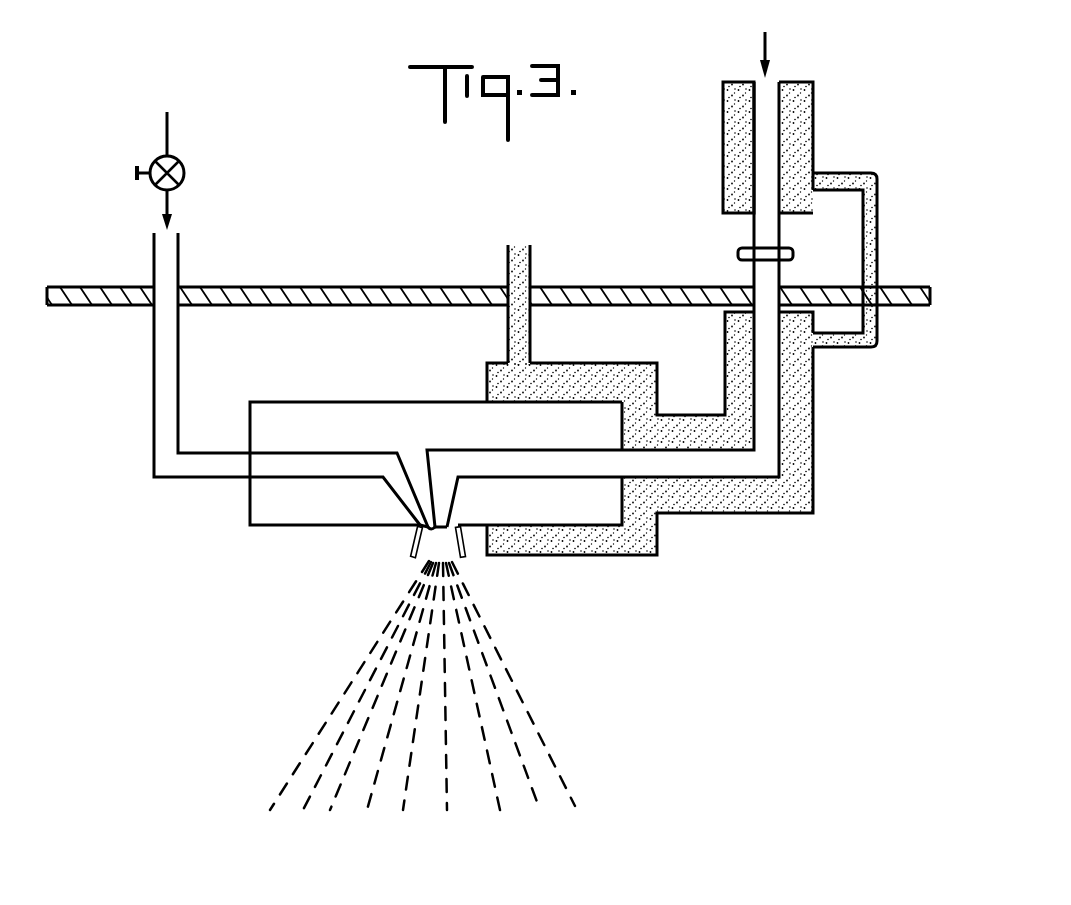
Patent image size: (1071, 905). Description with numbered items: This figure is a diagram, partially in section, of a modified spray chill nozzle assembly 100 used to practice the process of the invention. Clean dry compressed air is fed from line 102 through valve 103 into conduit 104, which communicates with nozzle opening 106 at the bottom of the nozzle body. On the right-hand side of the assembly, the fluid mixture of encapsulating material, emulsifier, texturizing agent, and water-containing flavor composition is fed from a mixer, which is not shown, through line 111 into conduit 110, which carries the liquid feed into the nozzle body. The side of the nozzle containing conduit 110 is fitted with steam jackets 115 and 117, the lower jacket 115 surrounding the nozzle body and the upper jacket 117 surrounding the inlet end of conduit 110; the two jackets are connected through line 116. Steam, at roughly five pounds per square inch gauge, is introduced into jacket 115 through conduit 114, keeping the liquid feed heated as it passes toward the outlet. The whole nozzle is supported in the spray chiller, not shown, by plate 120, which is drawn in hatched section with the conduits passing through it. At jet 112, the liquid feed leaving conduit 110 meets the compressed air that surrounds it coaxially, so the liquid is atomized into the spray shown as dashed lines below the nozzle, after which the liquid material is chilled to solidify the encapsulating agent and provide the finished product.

The nozzle assembly 100 is at (302, 620).
The line 102 is at (167, 123).
The valve 103 is at (185, 167).
The conduit 104 is at (165, 270).
The nozzle opening 106 is at (425, 558).
The conduit 110 is at (775, 117).
The line 111 is at (765, 32).
The jet 112 is at (467, 557).
The conduit 114 is at (525, 253).
The steam jacket 115 is at (718, 517).
The line 116 is at (877, 258).
The steam jacket 117 is at (810, 147).
The plate 120 is at (375, 293).